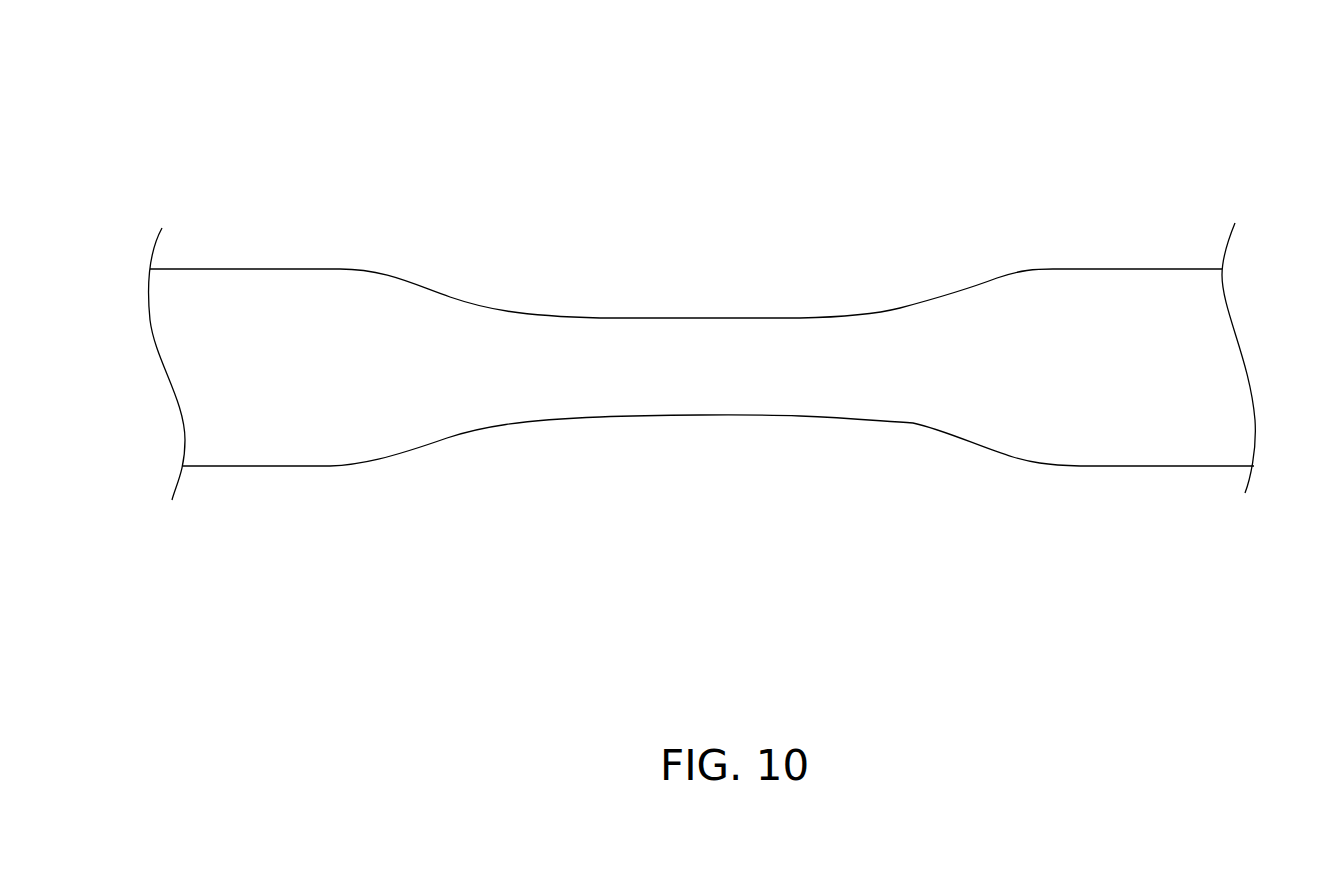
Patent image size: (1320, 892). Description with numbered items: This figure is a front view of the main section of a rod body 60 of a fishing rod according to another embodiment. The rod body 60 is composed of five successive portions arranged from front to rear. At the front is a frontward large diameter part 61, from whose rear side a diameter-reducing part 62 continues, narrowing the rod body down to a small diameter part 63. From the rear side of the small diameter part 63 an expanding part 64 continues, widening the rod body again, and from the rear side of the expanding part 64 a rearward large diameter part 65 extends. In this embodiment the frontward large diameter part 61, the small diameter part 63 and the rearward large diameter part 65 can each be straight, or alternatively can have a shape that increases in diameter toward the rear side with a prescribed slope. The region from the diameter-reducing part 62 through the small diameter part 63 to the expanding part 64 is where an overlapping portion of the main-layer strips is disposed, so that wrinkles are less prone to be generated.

The rod body 60 is at (702, 387).
The frontward large diameter part 61 is at (252, 269).
The diameter-reducing part 62 is at (448, 295).
The small diameter part 63 is at (698, 316).
The expanding part 64 is at (948, 297).
The rearward large diameter part 65 is at (1133, 269).